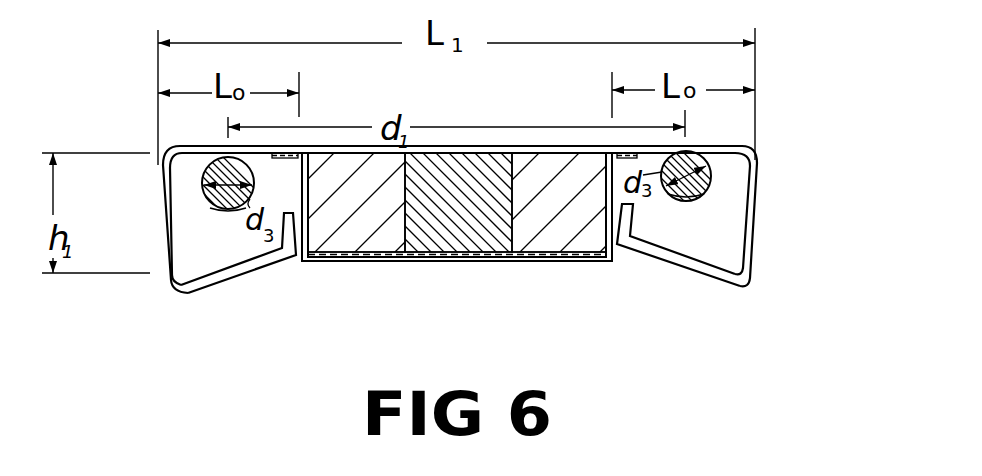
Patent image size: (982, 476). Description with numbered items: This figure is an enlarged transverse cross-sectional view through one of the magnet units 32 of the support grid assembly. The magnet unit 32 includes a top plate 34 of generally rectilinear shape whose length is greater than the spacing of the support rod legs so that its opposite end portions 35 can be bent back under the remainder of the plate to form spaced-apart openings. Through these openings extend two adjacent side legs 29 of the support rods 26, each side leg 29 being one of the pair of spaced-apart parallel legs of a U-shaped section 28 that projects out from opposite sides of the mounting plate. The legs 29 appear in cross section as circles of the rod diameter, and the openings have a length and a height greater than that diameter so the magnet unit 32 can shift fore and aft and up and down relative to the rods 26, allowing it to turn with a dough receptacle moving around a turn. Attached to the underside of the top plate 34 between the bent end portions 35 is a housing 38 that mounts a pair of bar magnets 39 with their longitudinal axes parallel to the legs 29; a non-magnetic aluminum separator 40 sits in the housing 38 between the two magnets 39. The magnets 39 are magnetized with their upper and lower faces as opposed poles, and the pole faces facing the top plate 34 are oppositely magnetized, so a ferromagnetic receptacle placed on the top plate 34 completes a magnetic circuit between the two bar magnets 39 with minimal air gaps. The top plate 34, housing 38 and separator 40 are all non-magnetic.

The support rod 26 is at (715, 180).
The U-shaped section 28 is at (203, 190).
The side leg 29 is at (228, 210).
The magnet unit 32 is at (727, 140).
The top plate 34 is at (520, 149).
The end portion 35 is at (186, 295).
The housing 38 is at (520, 249).
The bar magnet 39 is at (343, 246).
The non-magnetic separator 40 is at (447, 243).